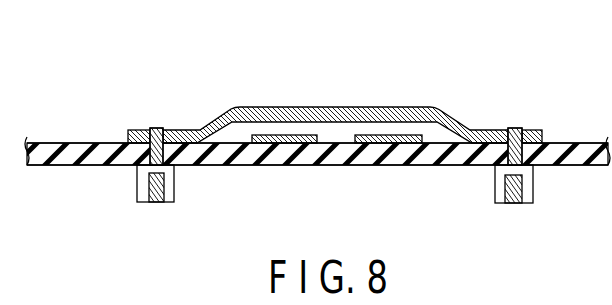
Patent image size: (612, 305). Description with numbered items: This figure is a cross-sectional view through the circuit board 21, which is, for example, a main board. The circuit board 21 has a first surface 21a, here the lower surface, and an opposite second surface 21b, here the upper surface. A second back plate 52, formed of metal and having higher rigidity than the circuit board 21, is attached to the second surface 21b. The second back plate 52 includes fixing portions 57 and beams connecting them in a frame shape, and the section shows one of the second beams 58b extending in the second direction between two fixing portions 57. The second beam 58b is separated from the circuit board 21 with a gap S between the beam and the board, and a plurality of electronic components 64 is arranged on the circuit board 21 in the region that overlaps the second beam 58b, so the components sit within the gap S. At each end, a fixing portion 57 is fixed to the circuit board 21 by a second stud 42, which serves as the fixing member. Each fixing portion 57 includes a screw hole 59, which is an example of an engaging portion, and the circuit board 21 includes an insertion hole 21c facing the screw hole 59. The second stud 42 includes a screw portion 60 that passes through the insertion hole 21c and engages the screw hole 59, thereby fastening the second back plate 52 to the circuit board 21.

The circuit board 21 is at (39, 141).
The first surface 21a is at (49, 166).
The second surface 21b is at (80, 141).
The insertion hole 21c is at (138, 161).
The second stud 42 is at (136, 205).
The second back plate 52 is at (428, 95).
The fixing portion 57 is at (186, 130).
The second beam 58b is at (341, 107).
The screw hole 59 is at (142, 131).
The screw portion 60 is at (157, 128).
The electronic component 64 is at (285, 146).
The gap S is at (280, 121).